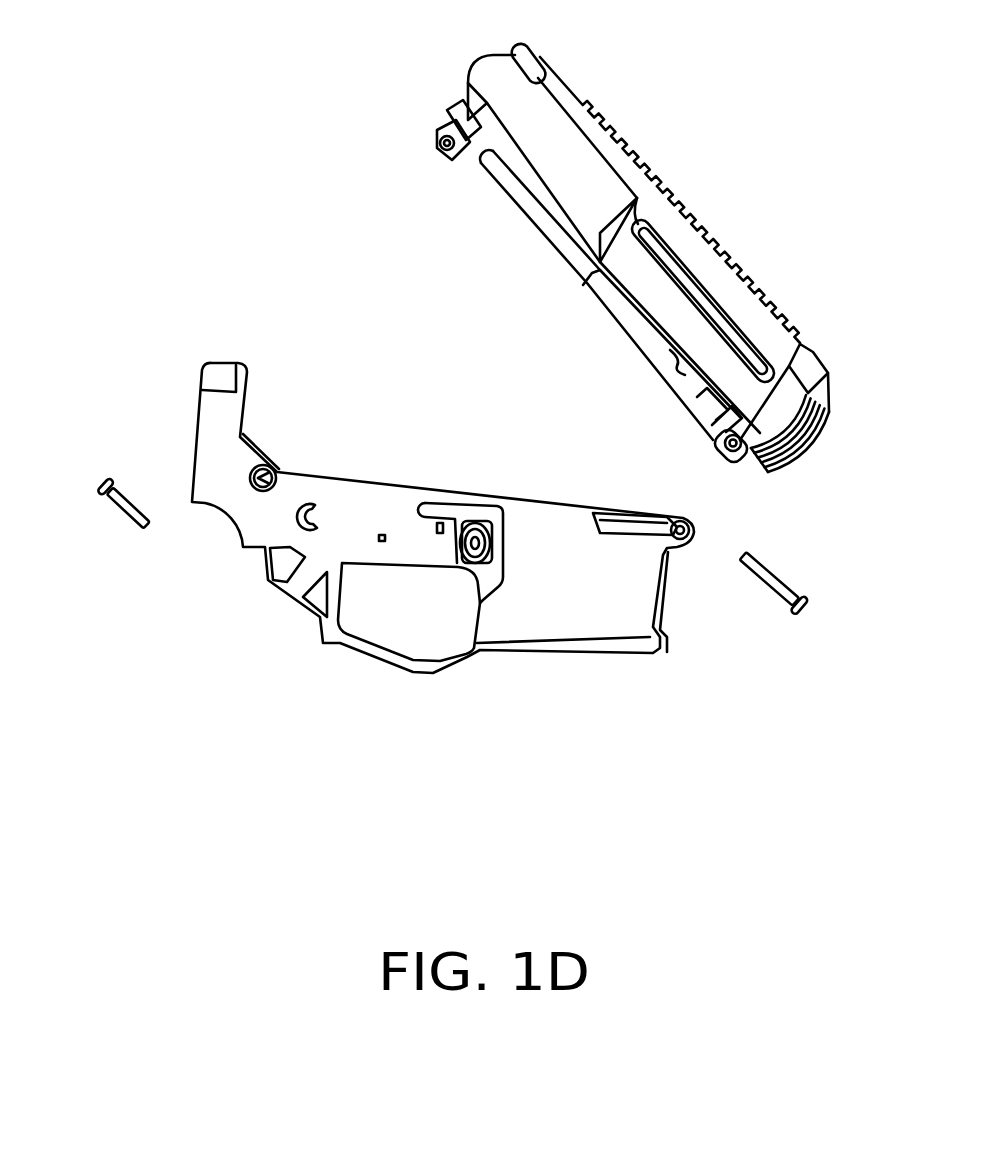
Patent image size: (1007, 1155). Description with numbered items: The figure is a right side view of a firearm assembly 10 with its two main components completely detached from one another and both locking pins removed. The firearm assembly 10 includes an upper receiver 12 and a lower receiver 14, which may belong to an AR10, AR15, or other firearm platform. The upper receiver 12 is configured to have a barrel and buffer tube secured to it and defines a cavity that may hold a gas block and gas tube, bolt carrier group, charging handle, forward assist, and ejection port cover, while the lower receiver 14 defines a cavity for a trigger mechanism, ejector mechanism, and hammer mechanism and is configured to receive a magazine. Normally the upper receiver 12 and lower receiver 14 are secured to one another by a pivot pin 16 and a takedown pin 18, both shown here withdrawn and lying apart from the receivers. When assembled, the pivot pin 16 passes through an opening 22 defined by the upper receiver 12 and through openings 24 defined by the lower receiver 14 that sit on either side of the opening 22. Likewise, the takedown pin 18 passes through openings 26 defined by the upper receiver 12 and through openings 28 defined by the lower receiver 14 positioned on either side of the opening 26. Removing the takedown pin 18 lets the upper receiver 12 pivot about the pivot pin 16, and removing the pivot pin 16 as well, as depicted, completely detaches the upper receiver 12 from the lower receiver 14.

The firearm assembly 10 is at (860, 126).
The upper receiver 12 is at (533, 162).
The lower receiver 14 is at (313, 532).
The pivot pin 16 is at (767, 588).
The takedown pin 18 is at (120, 510).
The opening 22 is at (725, 456).
The openings 24 is at (692, 530).
The openings 26 is at (444, 148).
The openings 28 is at (277, 474).